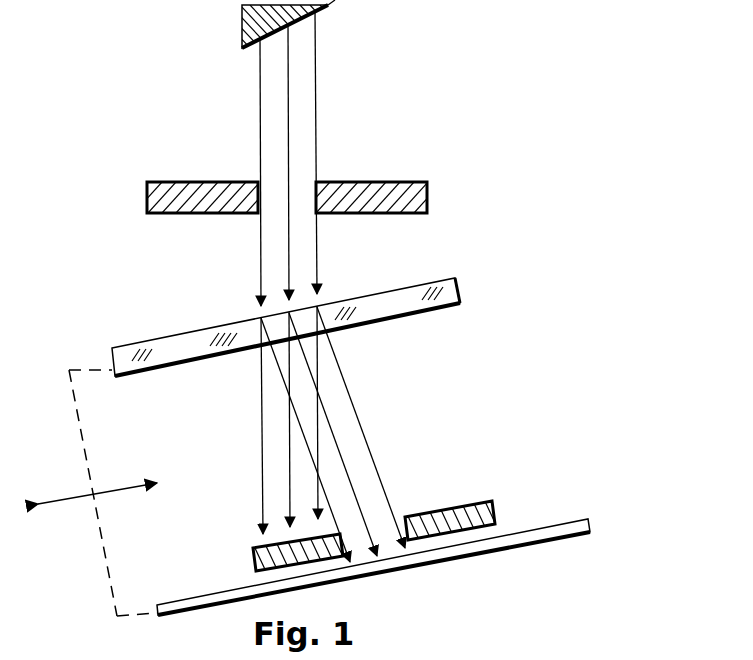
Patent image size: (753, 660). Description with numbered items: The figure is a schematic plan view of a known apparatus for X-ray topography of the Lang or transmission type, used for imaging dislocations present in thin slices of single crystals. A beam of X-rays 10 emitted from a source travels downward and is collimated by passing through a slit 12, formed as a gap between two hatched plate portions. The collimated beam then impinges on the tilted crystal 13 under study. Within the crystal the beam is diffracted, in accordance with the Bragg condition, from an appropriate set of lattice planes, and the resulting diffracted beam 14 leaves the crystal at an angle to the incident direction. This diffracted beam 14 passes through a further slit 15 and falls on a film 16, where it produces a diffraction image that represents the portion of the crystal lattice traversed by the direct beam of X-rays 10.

The beam of X-rays 10 is at (316, 80).
The slit 12 is at (318, 180).
The crystal 13 is at (461, 291).
The diffracted beam 14 is at (364, 430).
The further slit 15 is at (406, 518).
The film 16 is at (590, 523).